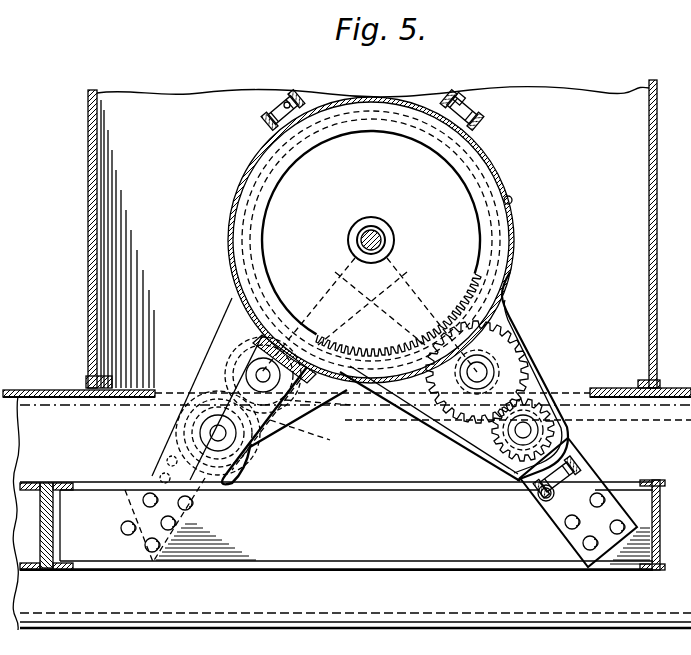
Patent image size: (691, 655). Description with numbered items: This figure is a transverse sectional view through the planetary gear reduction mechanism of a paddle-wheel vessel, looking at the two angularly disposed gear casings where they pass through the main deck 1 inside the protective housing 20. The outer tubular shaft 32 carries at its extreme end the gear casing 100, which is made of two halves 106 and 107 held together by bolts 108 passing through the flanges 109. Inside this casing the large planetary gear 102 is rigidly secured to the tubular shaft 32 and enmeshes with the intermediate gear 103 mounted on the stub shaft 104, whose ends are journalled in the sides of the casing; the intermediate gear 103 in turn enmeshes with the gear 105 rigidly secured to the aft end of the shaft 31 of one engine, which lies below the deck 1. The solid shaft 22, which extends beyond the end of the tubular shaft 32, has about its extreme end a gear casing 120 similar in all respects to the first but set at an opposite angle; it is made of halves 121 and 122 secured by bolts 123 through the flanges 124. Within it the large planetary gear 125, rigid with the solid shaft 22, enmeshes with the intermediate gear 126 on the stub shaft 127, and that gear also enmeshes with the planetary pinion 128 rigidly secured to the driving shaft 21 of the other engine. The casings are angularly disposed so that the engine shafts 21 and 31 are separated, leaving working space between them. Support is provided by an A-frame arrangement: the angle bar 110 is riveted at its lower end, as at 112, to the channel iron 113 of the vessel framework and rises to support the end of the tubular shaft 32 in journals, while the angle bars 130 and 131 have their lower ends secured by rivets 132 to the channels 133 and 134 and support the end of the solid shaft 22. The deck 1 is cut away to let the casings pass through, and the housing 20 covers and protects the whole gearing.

The main deck 1 is at (20, 392).
The protective housing 20 is at (88, 194).
The shaft 21 is at (218, 433).
The solid shaft 22 is at (383, 234).
The shaft 31 is at (528, 430).
The tubular shaft 32 is at (373, 226).
The gear casing 100 is at (489, 161).
The large planetary gear 102 is at (392, 352).
The intermediate gear 103 is at (518, 324).
The stub shaft 104 is at (480, 372).
The gear 105 is at (500, 444).
The casing half 106 is at (509, 203).
The casing half 107 is at (242, 210).
The bolts 108 is at (267, 121).
The flanges 109 is at (287, 100).
The angle bar 110 is at (585, 494).
The rivets 112 is at (583, 541).
The channel iron 113 is at (378, 484).
The gear casing 120 is at (230, 304).
The casing half 121 is at (226, 322).
The casing half 122 is at (287, 436).
The bolts 123 is at (484, 118).
The flanges 124 is at (464, 97).
The large planetary gear 125 is at (246, 258).
The intermediate gear 126 is at (222, 356).
The stub shaft 127 is at (262, 375).
The planetary pinion 128 is at (262, 440).
The angle bar 130 is at (250, 360).
The angle bar 131 is at (180, 447).
The rivets 132 is at (145, 545).
The channel 133 is at (78, 500).
The channel 134 is at (46, 485).